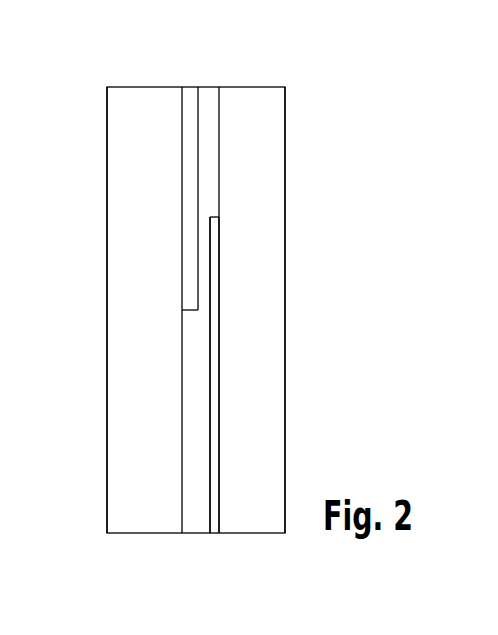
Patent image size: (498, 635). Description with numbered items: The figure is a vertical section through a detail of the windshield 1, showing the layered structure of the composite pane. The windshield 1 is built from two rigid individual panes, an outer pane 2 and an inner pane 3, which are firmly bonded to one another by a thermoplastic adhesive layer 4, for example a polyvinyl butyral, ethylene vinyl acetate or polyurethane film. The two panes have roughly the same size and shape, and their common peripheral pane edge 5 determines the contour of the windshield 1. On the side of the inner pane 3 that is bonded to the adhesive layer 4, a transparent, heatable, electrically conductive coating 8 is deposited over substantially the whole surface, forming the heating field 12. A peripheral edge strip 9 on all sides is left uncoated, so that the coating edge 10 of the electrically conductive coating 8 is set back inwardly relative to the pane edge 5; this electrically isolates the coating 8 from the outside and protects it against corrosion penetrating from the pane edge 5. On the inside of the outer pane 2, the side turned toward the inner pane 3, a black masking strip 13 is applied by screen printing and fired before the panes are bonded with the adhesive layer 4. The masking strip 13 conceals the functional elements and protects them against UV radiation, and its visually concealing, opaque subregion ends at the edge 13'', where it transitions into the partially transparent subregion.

The windshield 1 is at (303, 105).
The outer pane 2 is at (148, 507).
The inner pane 3 is at (247, 507).
The adhesive layer 4 is at (192, 510).
The peripheral pane edge 5 is at (233, 533).
The electrically conductive coating 8 is at (213, 337).
The peripheral edge strip 9 is at (219, 140).
The peripheral coating edge 10 is at (213, 217).
The heating field 12 is at (333, 343).
The masking strip 13 is at (191, 163).
The edge of the visually concealing, opaque subregion of the masking strip 13'' is at (123, 331).